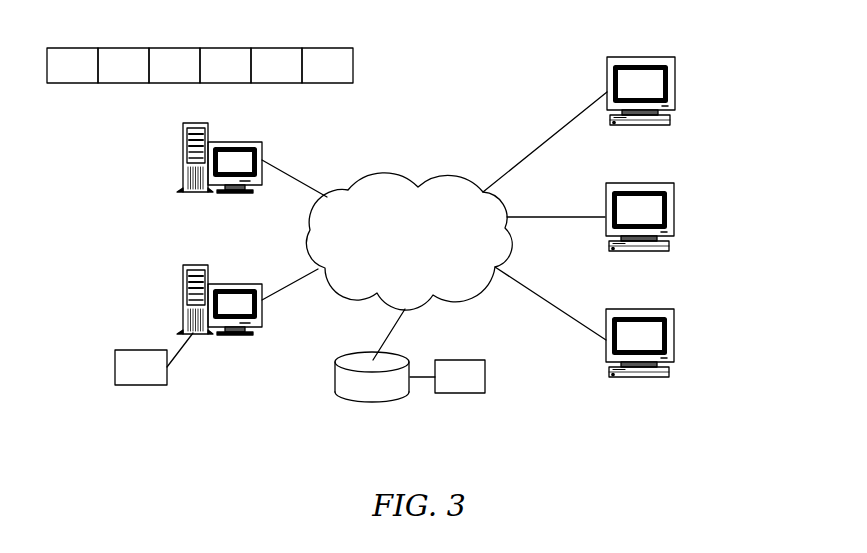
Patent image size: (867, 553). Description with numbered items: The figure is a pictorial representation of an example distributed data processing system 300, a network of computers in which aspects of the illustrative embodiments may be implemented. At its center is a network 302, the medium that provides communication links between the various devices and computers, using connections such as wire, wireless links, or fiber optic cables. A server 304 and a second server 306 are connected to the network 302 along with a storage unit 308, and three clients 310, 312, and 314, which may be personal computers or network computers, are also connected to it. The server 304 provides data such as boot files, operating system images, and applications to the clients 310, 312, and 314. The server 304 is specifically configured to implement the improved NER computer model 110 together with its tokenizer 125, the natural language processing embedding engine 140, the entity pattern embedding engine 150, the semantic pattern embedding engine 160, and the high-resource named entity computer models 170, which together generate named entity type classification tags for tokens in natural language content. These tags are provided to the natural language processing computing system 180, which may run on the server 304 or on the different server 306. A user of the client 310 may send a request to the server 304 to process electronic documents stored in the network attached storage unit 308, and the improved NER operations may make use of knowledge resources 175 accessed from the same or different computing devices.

The improved NER computer model 110 is at (58, 76).
The tokenizer 125 is at (109, 76).
The natural language processing embedding engine 140 is at (160, 76).
The entity pattern embedding engine 150 is at (235, 142).
The semantic pattern embedding engine 160 is at (262, 76).
The high-resource named entity computer models 170 is at (313, 76).
The knowledge resources 175 is at (445, 387).
The natural language processing computing system 180 is at (126, 379).
The distributed data processing system 300 is at (472, 110).
The network 302 is at (395, 251).
The server 304 is at (183, 158).
The server 306 is at (185, 300).
The storage unit 308 is at (357, 392).
The client 310 is at (677, 90).
The client 312 is at (675, 217).
The client 314 is at (674, 345).